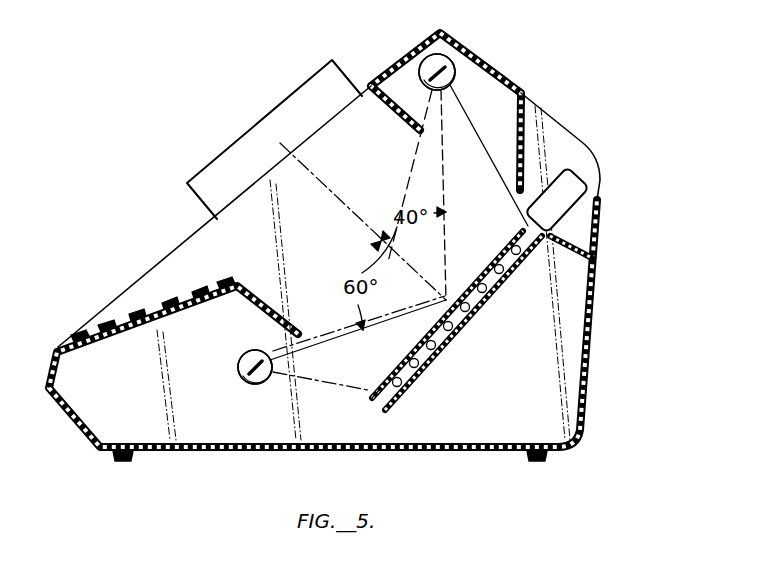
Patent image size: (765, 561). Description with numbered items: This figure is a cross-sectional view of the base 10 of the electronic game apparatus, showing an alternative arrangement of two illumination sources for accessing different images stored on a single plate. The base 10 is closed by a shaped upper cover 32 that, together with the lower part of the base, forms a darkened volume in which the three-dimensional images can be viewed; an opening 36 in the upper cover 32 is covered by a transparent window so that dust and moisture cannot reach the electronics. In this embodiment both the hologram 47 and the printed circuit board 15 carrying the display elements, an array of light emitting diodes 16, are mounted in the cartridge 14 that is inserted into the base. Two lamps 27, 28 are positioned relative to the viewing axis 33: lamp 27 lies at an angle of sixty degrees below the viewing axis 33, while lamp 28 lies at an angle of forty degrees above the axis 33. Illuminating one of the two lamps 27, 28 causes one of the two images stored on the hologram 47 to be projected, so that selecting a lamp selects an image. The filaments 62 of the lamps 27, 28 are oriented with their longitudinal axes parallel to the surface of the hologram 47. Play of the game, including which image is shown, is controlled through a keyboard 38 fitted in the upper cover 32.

The base 10 is at (600, 388).
The cartridge 14 is at (582, 186).
The printed circuit board 15 is at (497, 289).
The light emitting diodes 16 is at (453, 330).
The lamp 27 is at (255, 385).
The lamp 28 is at (450, 50).
The upper cover 32 is at (498, 72).
The viewing axis 33 is at (279, 143).
The opening 36 is at (251, 130).
The keyboard 38 is at (130, 318).
The hologram 47 is at (372, 392).
The filaments 62 is at (432, 66).